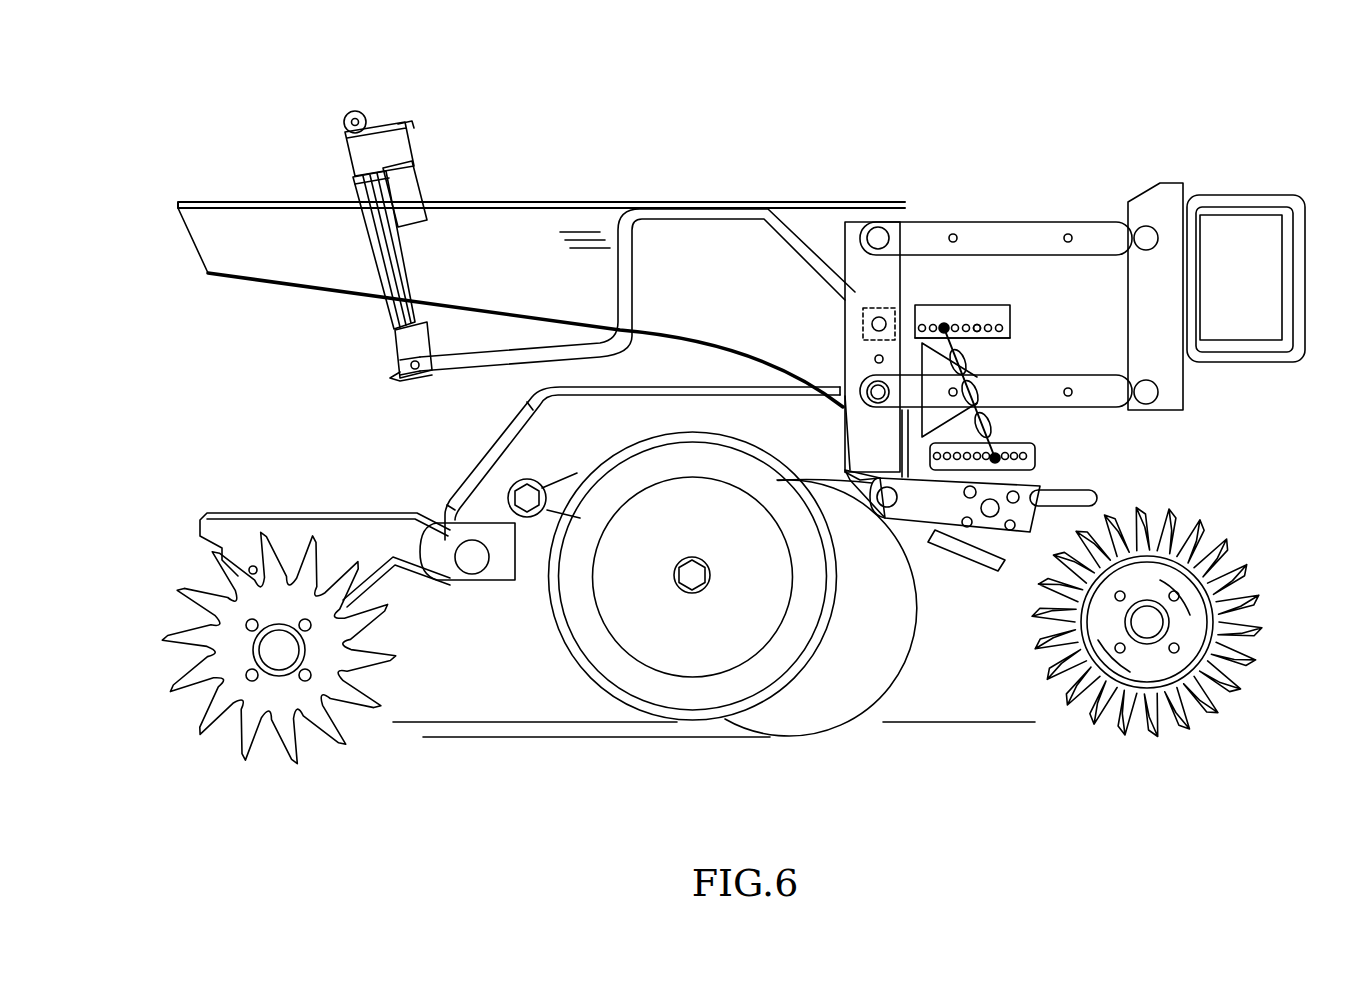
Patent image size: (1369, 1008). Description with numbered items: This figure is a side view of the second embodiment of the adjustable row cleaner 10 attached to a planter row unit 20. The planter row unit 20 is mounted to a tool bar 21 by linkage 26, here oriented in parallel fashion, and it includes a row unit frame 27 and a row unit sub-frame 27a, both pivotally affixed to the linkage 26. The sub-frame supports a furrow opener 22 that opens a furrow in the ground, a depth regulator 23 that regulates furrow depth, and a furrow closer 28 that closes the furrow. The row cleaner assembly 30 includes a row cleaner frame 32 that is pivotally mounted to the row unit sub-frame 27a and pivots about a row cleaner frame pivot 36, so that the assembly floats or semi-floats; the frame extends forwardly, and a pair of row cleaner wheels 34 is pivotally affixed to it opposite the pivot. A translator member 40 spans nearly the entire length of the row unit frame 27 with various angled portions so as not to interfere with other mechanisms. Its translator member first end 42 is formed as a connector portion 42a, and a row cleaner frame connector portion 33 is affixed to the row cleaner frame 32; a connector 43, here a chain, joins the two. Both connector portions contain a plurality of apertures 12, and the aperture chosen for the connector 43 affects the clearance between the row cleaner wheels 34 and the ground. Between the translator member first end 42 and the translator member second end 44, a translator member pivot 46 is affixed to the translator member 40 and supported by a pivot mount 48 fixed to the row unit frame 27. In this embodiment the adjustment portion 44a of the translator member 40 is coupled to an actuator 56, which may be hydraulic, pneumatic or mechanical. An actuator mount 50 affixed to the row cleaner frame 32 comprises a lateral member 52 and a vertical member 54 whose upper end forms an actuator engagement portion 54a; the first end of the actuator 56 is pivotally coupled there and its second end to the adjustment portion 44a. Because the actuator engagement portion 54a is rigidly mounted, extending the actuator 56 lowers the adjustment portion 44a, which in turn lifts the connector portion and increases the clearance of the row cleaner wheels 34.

The adjustable row cleaner 10 is at (648, 160).
The apertures 12 is at (998, 325).
The planter row unit 20 is at (1100, 160).
The tool bar 21 is at (1256, 212).
The furrow opener 22 is at (830, 675).
The depth regulator 23 is at (680, 692).
The linkage 26 is at (1113, 380).
The row unit frame 27 is at (572, 297).
The row unit sub-frame 27a is at (805, 433).
The furrow closer 28 is at (200, 535).
The row cleaner assembly 30 is at (1080, 580).
The row cleaner frame 32 is at (1030, 518).
The row cleaner frame connector portion 33 is at (1030, 475).
The row cleaner wheels 34 is at (1160, 690).
The row cleaner frame pivot 36 is at (890, 510).
The translator member 40 is at (845, 290).
The translator member first end 42 is at (915, 310).
The connector portion 42a is at (1010, 325).
The connector 43 is at (990, 425).
The translator member second end 44 is at (475, 372).
The adjustment portion 44a is at (405, 368).
The translator member pivot 46 is at (866, 320).
The pivot mount 48 is at (868, 360).
The actuator mount 50 is at (349, 224).
The lateral member 52 is at (350, 300).
The vertical member 54 is at (362, 265).
The actuator engagement portion 54a is at (366, 118).
The actuator 56 is at (393, 270).